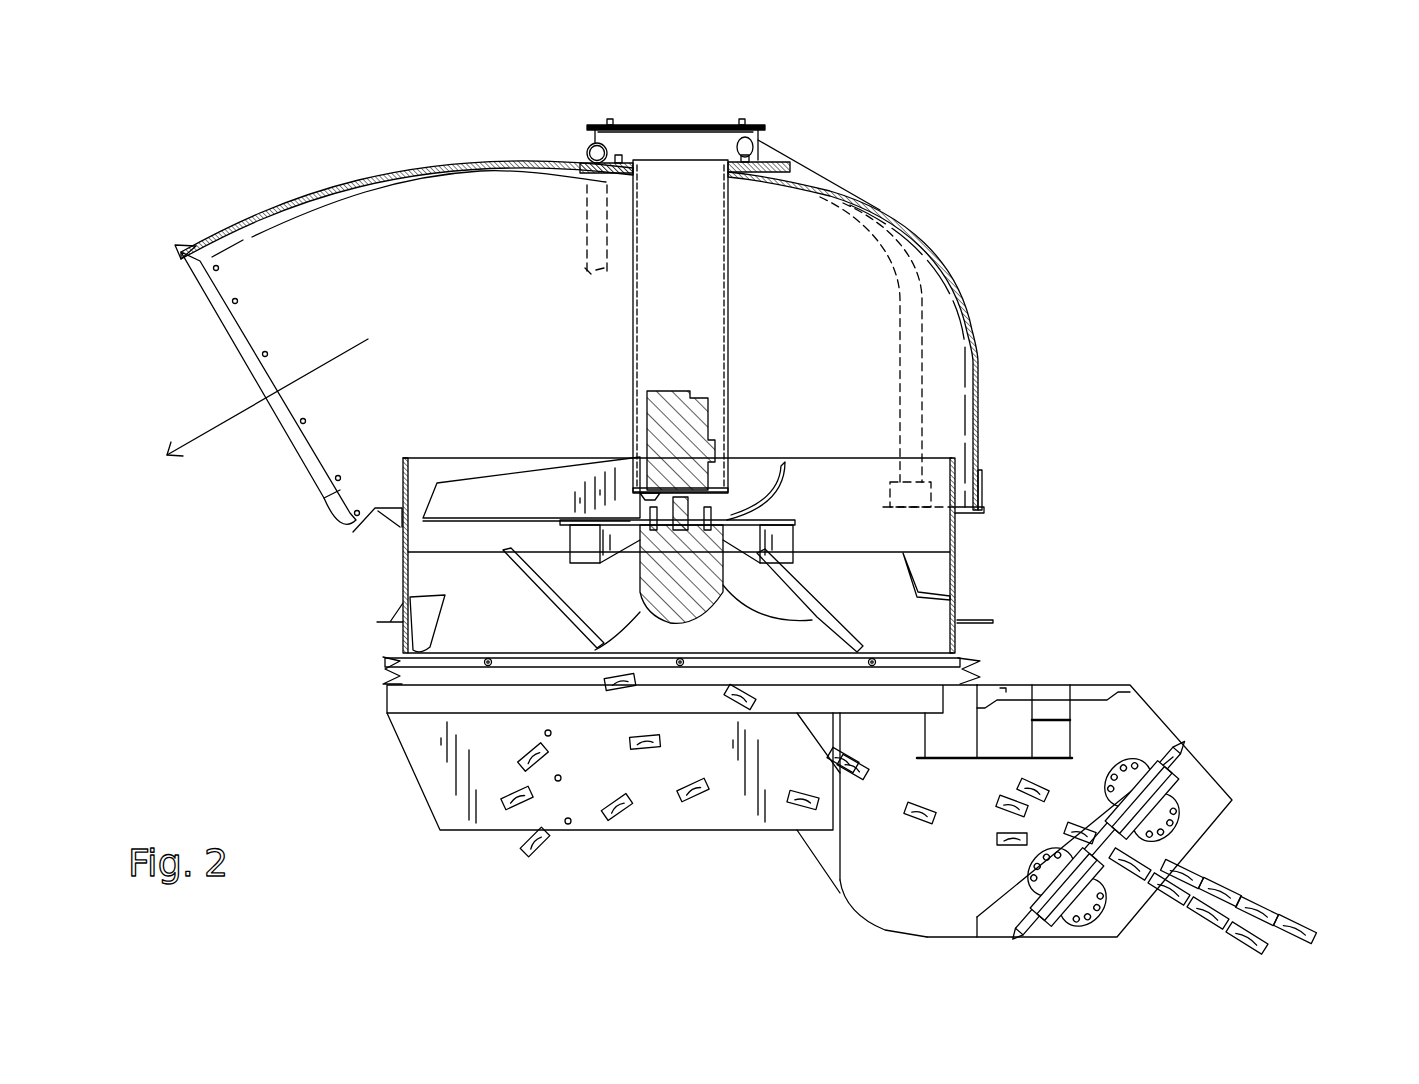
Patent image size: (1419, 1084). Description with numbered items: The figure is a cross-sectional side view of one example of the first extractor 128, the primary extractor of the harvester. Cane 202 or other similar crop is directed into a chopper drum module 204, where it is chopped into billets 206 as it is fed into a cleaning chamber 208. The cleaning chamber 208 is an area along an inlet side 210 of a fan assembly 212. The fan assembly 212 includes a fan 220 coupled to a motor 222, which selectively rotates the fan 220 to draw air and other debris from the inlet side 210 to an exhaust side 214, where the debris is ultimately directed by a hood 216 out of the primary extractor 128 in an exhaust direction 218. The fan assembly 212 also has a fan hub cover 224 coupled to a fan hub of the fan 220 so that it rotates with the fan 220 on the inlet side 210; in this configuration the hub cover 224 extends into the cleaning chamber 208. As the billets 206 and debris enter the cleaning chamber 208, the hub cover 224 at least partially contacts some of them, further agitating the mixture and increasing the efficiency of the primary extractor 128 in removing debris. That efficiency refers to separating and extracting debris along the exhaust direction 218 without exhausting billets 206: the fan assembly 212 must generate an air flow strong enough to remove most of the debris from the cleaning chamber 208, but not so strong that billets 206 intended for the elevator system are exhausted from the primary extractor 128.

The first extractor 128 is at (1130, 145).
The cane 202 is at (1280, 910).
The chopper drum module 204 is at (1185, 770).
The billets 206 is at (1010, 795).
The cleaning chamber 208 is at (500, 748).
The inlet side 210 is at (720, 768).
The fan assembly 212 is at (830, 417).
The exhaust side 214 is at (793, 287).
The hood 216 is at (448, 156).
The exhaust direction 218 is at (221, 425).
The fan 220 is at (507, 492).
The motor 222 is at (681, 398).
The fan hub cover 224 is at (790, 622).